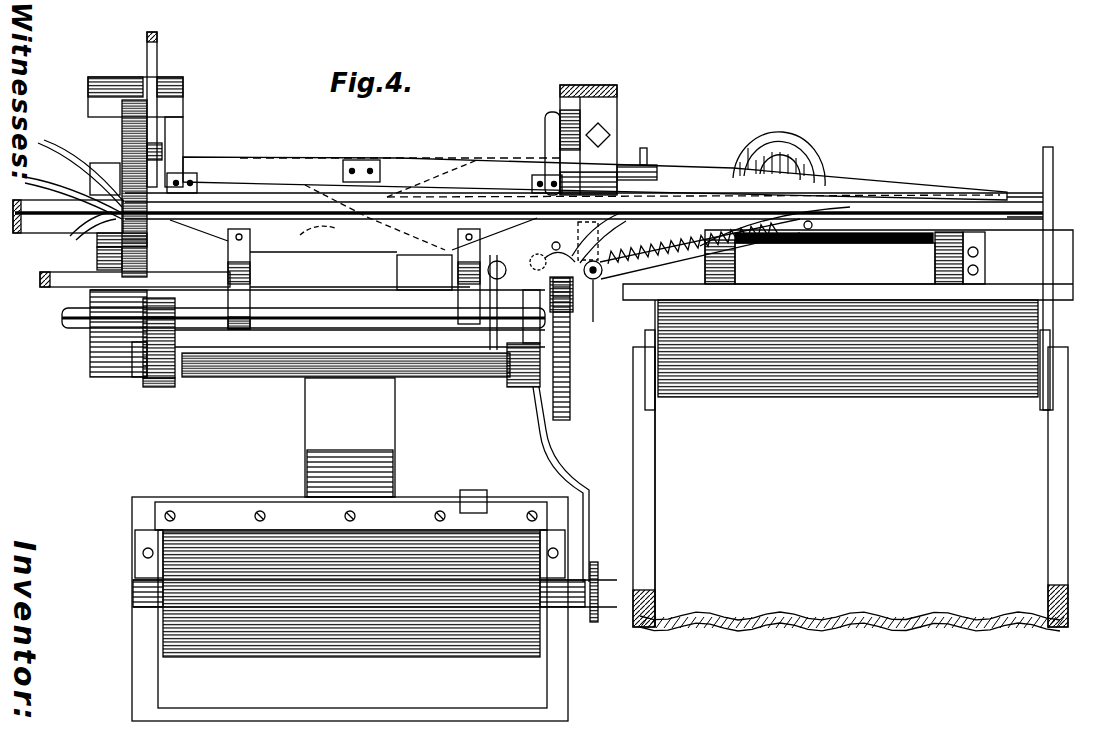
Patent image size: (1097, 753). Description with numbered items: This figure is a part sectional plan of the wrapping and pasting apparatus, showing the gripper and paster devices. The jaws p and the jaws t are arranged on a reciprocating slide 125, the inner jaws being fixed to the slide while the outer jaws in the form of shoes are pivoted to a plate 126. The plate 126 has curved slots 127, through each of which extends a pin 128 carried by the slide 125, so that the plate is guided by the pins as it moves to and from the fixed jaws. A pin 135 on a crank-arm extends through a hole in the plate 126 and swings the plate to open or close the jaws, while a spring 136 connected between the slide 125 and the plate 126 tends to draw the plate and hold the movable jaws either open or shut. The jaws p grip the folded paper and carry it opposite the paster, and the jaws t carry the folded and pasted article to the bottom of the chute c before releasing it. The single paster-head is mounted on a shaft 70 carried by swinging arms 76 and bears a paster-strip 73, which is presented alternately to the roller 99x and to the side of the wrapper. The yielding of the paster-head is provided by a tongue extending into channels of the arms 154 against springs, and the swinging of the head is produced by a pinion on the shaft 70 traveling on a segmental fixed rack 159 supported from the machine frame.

The shaft 70 is at (300, 322).
The paster-strip 73 is at (353, 252).
The swinging arms 76 is at (152, 385).
The roller 99x is at (374, 605).
The reciprocating slide 125 is at (424, 272).
The plate 126 is at (548, 262).
The curved slots 127 is at (686, 246).
The pin 128 is at (605, 310).
The pin 135 is at (549, 246).
The spring 136 is at (693, 241).
The arms 154 is at (228, 257).
The segmental fixed rack 159 is at (570, 399).
The jaws p is at (323, 238).
The jaws t is at (895, 212).
The chute c is at (850, 465).